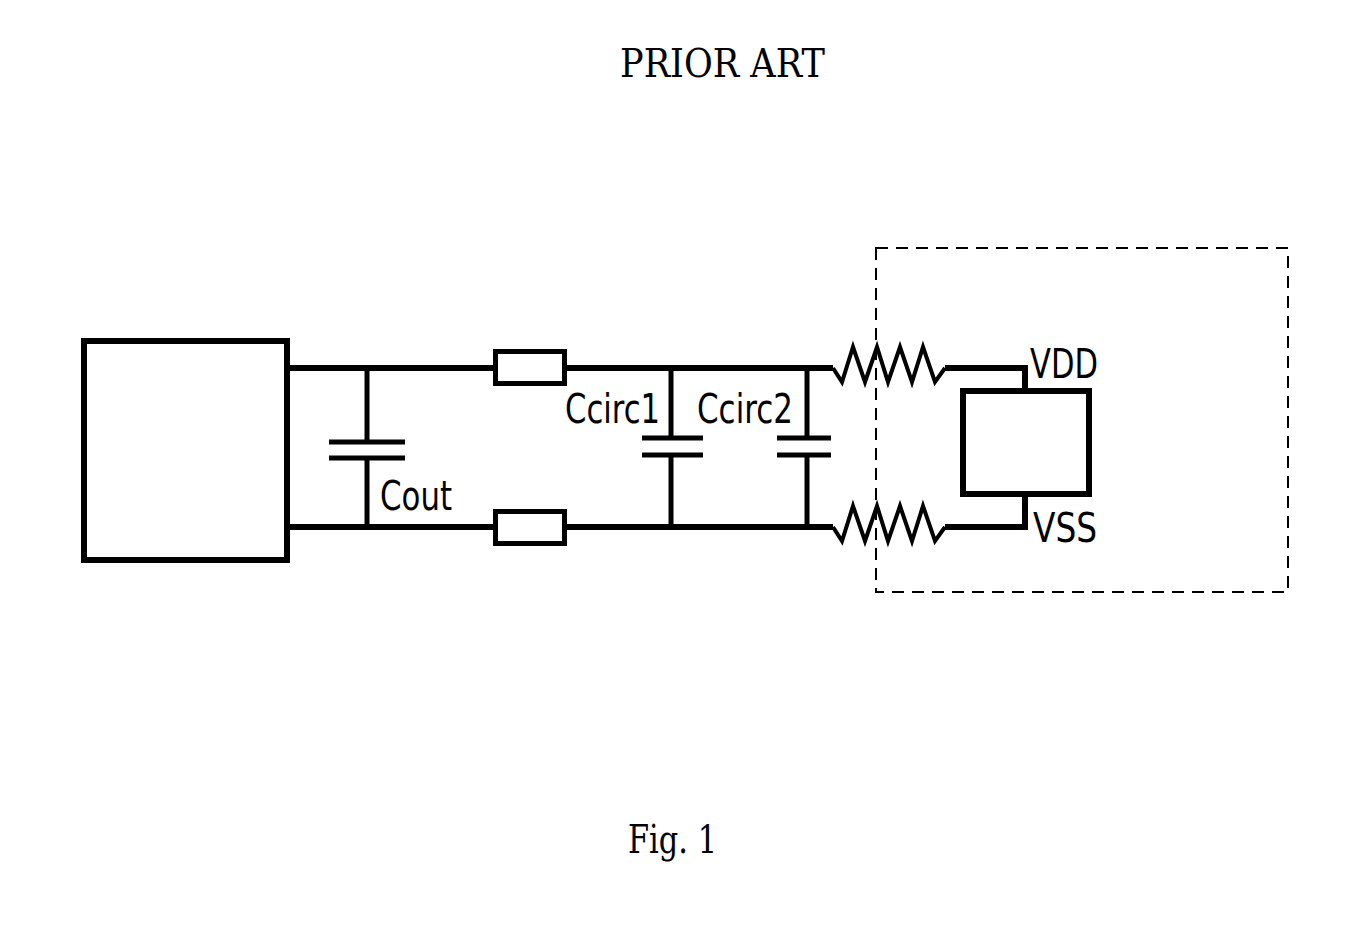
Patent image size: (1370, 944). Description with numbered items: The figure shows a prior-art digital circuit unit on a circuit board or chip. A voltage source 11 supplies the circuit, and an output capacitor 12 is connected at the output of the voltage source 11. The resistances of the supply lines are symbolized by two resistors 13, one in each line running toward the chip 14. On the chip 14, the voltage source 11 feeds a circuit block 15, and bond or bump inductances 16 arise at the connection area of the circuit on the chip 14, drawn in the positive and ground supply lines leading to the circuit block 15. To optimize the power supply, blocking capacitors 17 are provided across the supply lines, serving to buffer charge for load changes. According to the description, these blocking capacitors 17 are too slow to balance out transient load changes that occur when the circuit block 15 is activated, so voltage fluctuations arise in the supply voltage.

The voltage source 11 is at (212, 337).
The capacitor Cout 12 is at (383, 437).
The resistors 13 is at (532, 350).
The chip 14 is at (1102, 262).
The circuit block 15 is at (1095, 437).
The bond or bump inductances 16 is at (852, 353).
The blocking capacitors 17 is at (653, 457).